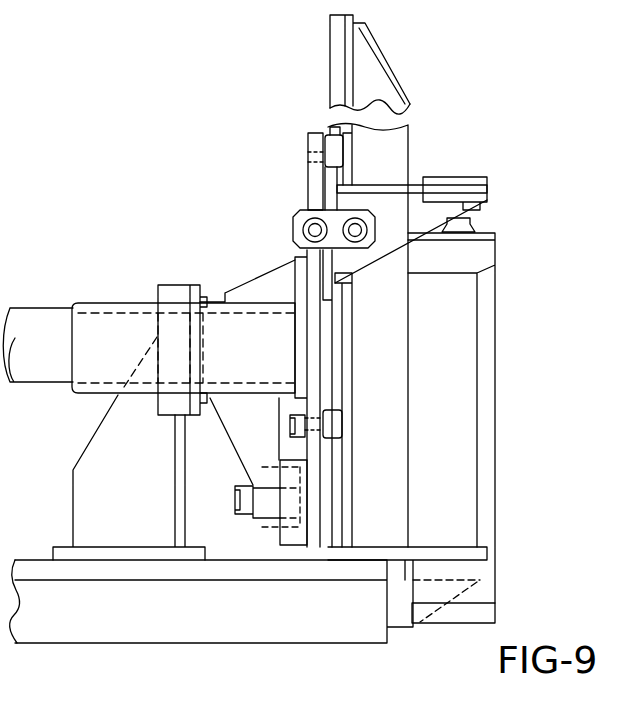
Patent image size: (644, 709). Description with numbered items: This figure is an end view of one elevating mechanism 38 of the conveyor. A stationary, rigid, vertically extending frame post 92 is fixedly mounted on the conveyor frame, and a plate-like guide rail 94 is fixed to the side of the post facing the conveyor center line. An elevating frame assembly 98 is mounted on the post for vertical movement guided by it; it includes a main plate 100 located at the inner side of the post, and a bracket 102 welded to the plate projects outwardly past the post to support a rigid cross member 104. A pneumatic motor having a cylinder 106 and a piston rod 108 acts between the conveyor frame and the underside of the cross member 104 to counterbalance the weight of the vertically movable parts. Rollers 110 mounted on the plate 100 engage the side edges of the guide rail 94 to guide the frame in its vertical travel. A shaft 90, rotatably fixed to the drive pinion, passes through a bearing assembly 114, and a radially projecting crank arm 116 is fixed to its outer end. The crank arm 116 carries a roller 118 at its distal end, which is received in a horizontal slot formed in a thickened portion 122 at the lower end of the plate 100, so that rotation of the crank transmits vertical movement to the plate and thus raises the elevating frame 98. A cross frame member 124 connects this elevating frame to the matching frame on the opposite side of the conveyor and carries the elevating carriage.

The elevating mechanism 38 is at (276, 179).
The shaft 90 is at (33, 310).
The frame post 92 is at (405, 132).
The guide rail 94 is at (338, 323).
The elevating frame assembly 98 is at (403, 204).
The main plate 100 is at (313, 268).
The bracket 102 is at (413, 243).
The cross member 104 is at (468, 177).
The cylinder 106 is at (460, 330).
The piston rod 108 is at (464, 218).
The roller 110 is at (343, 151).
The bearing assembly 114 is at (163, 418).
The crank arm 116 is at (262, 282).
The roller 118 is at (296, 463).
The thickened portion 122 is at (273, 533).
The cross frame member 124 is at (106, 304).